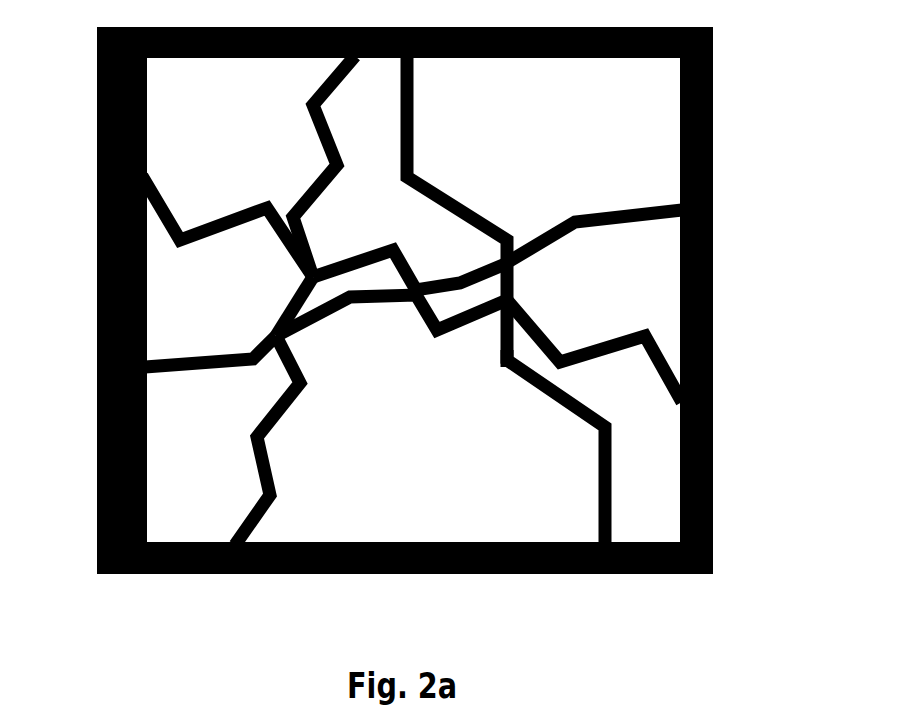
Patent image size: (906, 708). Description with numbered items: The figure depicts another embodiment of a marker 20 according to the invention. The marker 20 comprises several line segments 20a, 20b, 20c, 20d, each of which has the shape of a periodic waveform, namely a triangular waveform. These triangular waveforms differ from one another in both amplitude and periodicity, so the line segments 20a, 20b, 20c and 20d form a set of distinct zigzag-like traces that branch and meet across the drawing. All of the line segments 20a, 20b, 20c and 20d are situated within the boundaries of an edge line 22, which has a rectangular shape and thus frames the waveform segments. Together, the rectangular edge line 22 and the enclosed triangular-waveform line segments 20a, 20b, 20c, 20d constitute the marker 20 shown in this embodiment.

The marker 20 is at (411, 360).
The line segment 20a is at (182, 372).
The line segment 20b is at (181, 244).
The line segment 20c is at (270, 508).
The line segment 20d is at (598, 502).
The edge line 22 is at (716, 366).